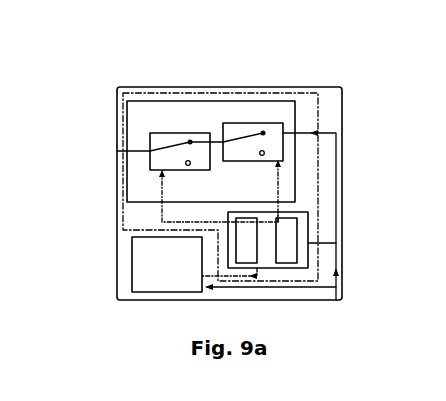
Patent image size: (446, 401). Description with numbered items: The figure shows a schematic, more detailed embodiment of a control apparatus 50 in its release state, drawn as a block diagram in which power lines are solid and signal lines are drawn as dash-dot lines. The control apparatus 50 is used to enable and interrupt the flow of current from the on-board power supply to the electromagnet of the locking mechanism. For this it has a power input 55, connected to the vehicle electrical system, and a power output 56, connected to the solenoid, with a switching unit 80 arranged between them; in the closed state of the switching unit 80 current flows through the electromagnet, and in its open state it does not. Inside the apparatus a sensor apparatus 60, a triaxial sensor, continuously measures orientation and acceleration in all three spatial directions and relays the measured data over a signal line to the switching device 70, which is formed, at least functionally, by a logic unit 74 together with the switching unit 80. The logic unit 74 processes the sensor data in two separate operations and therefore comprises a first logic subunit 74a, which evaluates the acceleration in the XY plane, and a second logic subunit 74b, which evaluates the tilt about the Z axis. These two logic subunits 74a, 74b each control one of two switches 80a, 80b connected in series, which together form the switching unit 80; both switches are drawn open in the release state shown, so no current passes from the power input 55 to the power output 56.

The control apparatus 50 is at (90, 234).
The power input 55 is at (338, 302).
The power output 56 is at (118, 150).
The sensor apparatus 60 is at (150, 272).
The switching device 70 is at (318, 122).
The logic unit 74 is at (272, 262).
The first logic subunit 74a is at (248, 232).
The second logic subunit 74b is at (290, 233).
The switching unit 80 is at (240, 108).
The first switch 80a is at (168, 138).
The second switch 80b is at (283, 130).